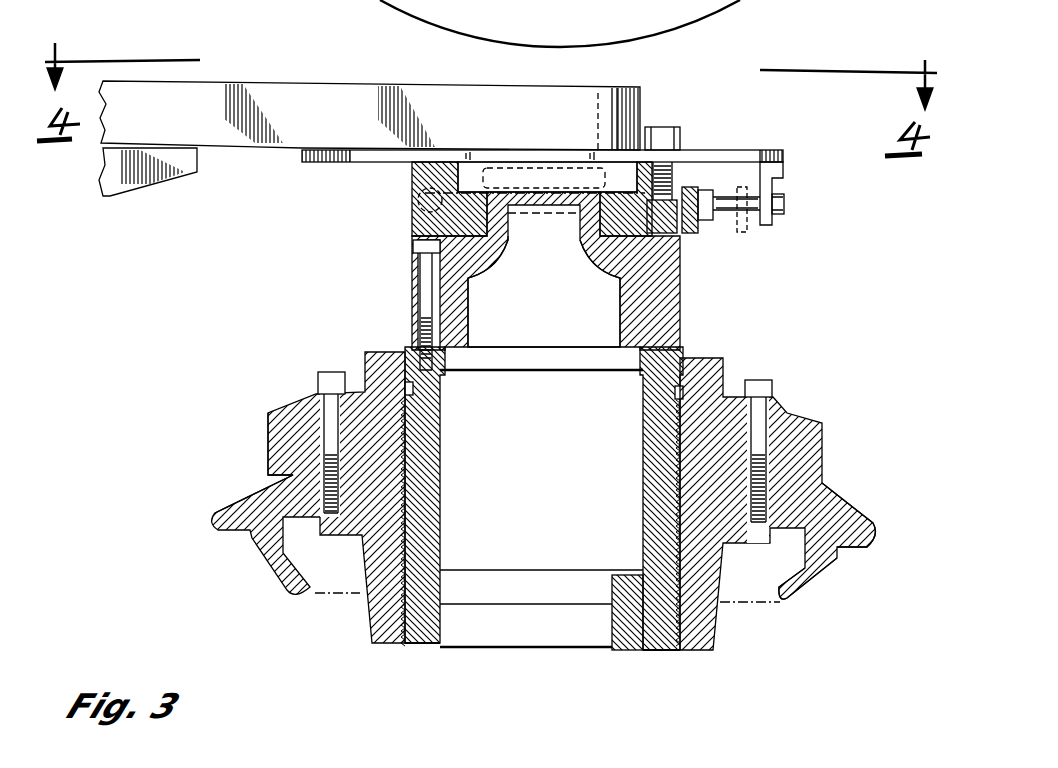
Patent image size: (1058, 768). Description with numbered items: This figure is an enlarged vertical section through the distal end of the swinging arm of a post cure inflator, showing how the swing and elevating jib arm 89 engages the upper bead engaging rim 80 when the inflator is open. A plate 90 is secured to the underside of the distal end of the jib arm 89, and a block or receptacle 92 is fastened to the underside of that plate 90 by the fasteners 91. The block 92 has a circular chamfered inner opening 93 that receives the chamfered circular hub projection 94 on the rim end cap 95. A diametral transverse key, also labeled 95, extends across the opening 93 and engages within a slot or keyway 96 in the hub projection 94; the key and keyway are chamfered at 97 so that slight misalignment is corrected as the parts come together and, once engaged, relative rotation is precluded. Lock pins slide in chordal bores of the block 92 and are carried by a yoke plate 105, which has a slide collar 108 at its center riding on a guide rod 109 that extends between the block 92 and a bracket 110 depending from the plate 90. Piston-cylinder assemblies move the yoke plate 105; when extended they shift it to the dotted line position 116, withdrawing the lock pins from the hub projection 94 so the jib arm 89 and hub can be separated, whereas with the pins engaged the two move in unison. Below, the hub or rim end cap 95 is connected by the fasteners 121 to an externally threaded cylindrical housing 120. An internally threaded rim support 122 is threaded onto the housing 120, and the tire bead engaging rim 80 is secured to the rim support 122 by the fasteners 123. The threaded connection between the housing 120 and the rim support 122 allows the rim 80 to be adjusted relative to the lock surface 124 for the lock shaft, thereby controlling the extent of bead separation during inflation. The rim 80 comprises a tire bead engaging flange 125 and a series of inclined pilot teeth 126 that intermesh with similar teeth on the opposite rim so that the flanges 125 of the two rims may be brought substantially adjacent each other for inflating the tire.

The upper bead engaging rim 80 is at (850, 495).
The jib arm 89 is at (232, 78).
The plate 90 is at (735, 150).
The fasteners 91 is at (672, 136).
The block or receptacle 92 is at (412, 200).
The circular chamfered inner opening 93 is at (488, 238).
The hub projection 94 is at (556, 160).
The rim end cap 95 is at (472, 163).
The slot or keyway 96 is at (518, 196).
The chamfer 97 is at (590, 192).
The yoke plate 105 is at (688, 234).
The slide collar 108 is at (702, 222).
The guide rod 109 is at (728, 212).
The bracket 110 is at (773, 186).
The dotted line position 116 is at (746, 224).
The cylindrical housing 120 is at (448, 460).
The fasteners 121 is at (430, 286).
The rim support 122 is at (262, 406).
The fasteners 123 is at (772, 380).
The lock surface 124 is at (512, 570).
The tire bead engaging flange 125 is at (840, 549).
The inclined pilot teeth 126 is at (813, 585).